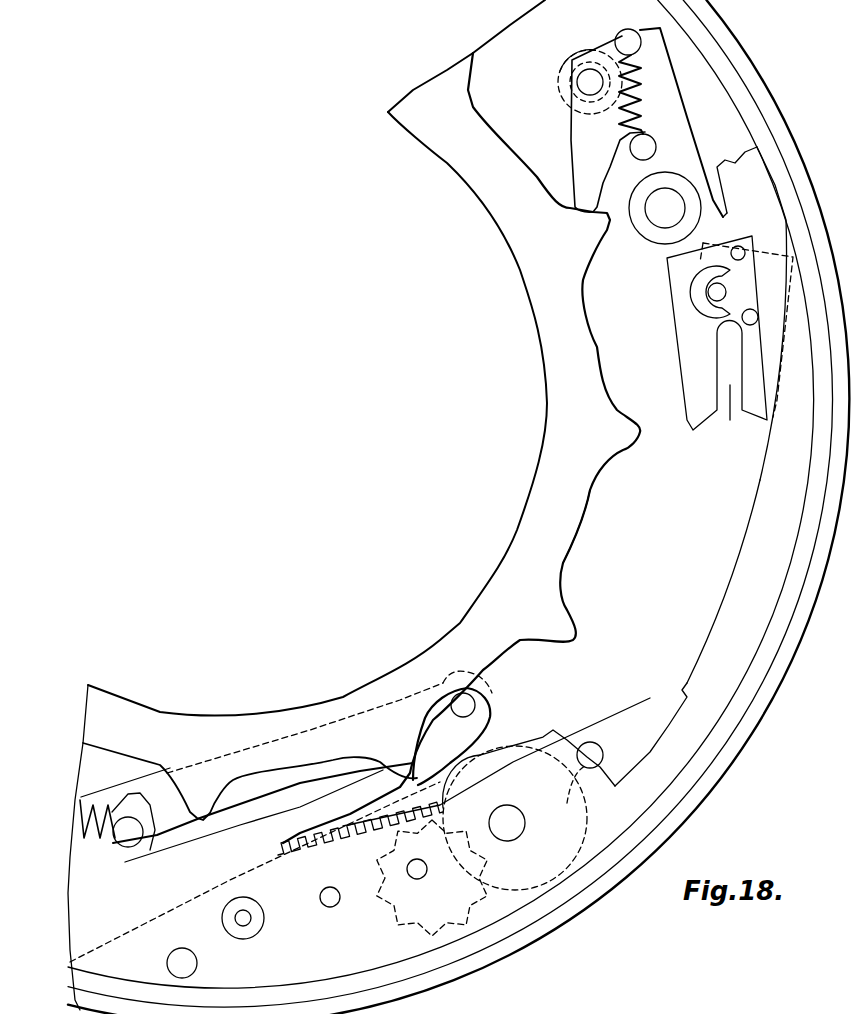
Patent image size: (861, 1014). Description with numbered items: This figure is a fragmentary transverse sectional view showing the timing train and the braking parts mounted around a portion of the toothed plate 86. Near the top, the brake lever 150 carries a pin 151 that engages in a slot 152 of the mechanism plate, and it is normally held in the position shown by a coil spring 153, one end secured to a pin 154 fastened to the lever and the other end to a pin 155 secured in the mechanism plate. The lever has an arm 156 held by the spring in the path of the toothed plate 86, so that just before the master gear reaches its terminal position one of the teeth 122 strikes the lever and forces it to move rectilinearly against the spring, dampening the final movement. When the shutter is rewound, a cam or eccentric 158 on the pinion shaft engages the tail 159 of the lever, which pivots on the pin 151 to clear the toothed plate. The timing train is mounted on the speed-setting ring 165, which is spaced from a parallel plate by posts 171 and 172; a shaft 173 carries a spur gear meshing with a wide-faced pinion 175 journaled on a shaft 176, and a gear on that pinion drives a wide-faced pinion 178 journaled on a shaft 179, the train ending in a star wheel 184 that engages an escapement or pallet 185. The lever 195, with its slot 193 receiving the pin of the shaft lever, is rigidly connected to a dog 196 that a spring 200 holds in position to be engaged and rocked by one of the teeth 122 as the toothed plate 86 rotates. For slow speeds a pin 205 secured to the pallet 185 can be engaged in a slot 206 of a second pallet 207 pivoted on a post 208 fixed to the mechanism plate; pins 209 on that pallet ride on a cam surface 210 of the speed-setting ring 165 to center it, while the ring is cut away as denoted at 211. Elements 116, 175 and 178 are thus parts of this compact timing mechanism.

The toothed plate 86 is at (600, 356).
The pivot pin 116 is at (673, 217).
The teeth 122 is at (634, 428).
The lever 150 is at (680, 123).
The pin 151 is at (578, 88).
The slot 152 is at (600, 52).
The coil spring 153 is at (637, 95).
The pin 154 is at (648, 18).
The pin 155 is at (636, 152).
The arm 156 is at (590, 185).
The cam or eccentric 158 is at (637, 217).
The tail 159 is at (710, 220).
The speed-setting ring 165 is at (717, 643).
The post 171 is at (196, 968).
The post 172 is at (513, 832).
The shaft 173 is at (250, 922).
The wide-faced pinion 175 is at (347, 830).
The shaft 176 is at (336, 905).
The wide-faced pinion 178 is at (397, 807).
The shaft 179 is at (422, 876).
The star wheel 184 is at (406, 928).
The escapement or pallet 185 is at (510, 757).
The slot 193 is at (476, 708).
The lever 195 is at (480, 684).
The dog 196 is at (132, 807).
The spring 200 is at (85, 800).
The pin 205 is at (595, 748).
The slot 206 is at (727, 415).
The second pallet or escapement 207 is at (690, 343).
The post 208 is at (708, 292).
The pins 209 is at (745, 258).
The cam surface 210 is at (748, 538).
The cut-away portion 211 is at (672, 712).